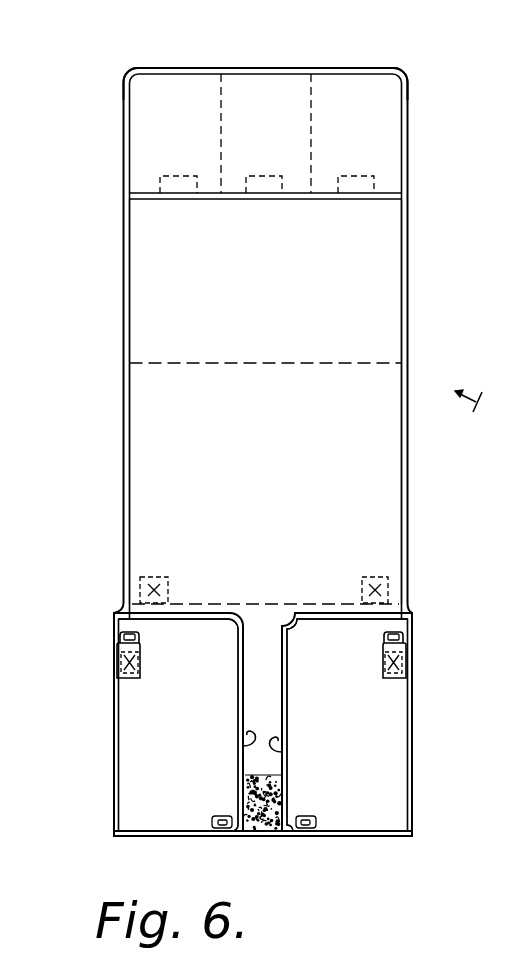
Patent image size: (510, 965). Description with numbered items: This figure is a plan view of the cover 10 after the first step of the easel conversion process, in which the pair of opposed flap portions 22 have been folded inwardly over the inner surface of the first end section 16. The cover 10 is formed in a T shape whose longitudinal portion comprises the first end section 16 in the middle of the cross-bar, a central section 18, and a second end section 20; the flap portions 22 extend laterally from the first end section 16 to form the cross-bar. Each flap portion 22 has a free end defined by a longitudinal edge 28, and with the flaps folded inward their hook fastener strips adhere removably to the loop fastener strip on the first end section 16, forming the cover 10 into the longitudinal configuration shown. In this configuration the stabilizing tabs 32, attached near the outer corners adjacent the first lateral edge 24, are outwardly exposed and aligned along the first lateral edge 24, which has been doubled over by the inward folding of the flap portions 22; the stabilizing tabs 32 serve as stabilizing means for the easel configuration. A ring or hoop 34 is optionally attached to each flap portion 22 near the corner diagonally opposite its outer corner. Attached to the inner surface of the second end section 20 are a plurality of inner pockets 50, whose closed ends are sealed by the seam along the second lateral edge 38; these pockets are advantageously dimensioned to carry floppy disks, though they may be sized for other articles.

The cover 10 is at (100, 293).
The second lateral edge 38 is at (257, 67).
The inner pockets 50 is at (183, 140).
The second end section 20 is at (274, 290).
The central section 18 is at (268, 481).
The first end section 16 is at (270, 669).
The flap portions 22 is at (178, 727).
The longitudinal edge 28 is at (245, 746).
The stabilizing tabs 32 is at (220, 816).
The ring or hoop 34 is at (115, 637).
The first lateral edge 24 is at (362, 837).